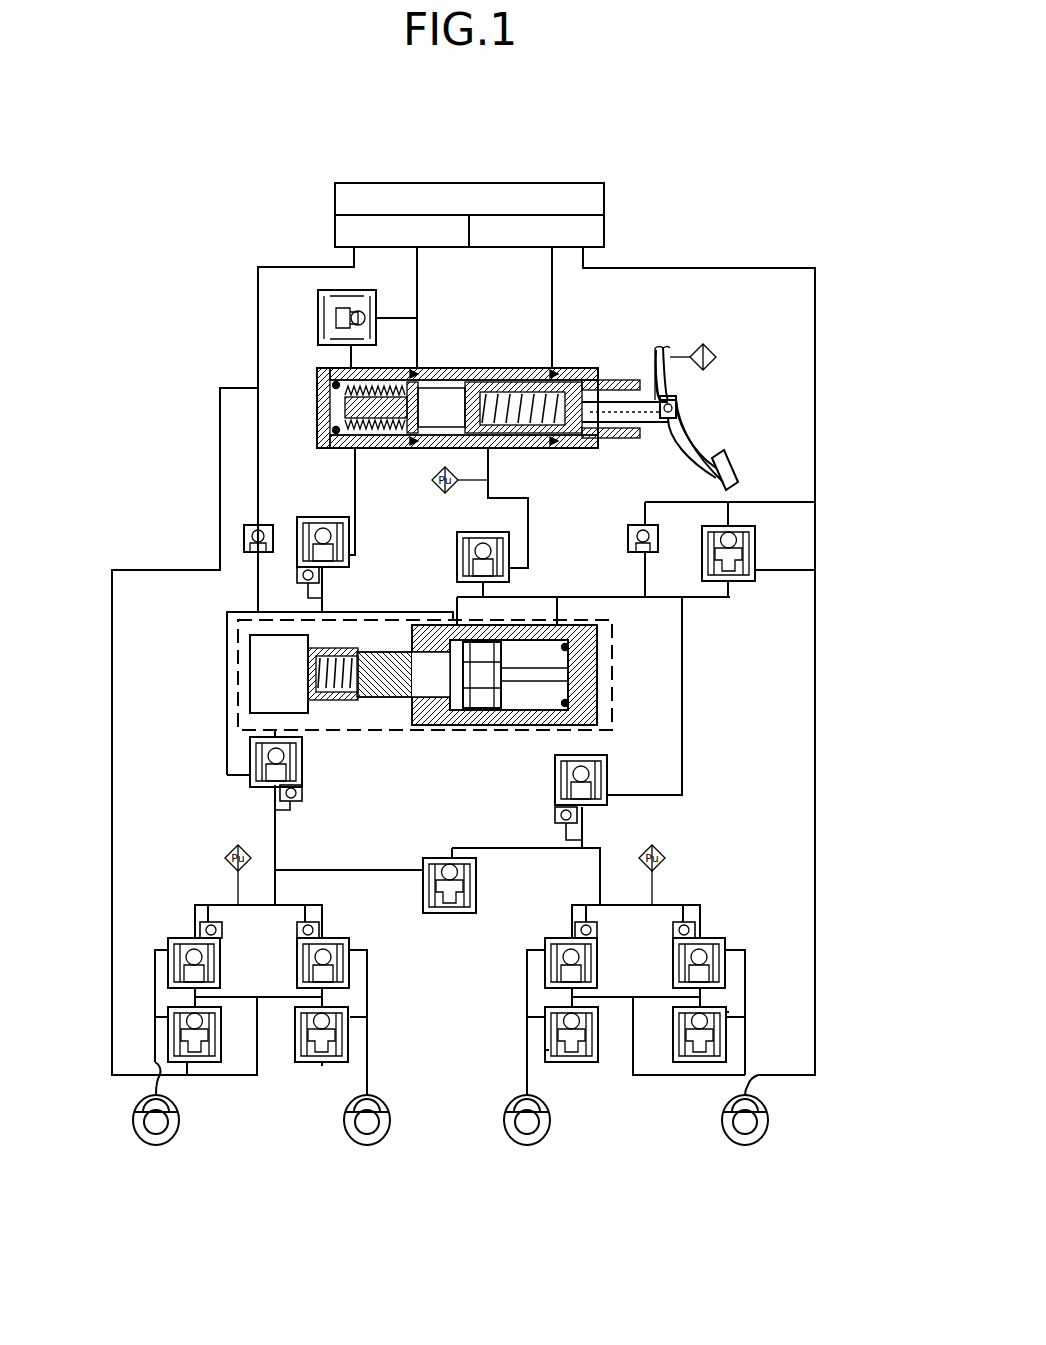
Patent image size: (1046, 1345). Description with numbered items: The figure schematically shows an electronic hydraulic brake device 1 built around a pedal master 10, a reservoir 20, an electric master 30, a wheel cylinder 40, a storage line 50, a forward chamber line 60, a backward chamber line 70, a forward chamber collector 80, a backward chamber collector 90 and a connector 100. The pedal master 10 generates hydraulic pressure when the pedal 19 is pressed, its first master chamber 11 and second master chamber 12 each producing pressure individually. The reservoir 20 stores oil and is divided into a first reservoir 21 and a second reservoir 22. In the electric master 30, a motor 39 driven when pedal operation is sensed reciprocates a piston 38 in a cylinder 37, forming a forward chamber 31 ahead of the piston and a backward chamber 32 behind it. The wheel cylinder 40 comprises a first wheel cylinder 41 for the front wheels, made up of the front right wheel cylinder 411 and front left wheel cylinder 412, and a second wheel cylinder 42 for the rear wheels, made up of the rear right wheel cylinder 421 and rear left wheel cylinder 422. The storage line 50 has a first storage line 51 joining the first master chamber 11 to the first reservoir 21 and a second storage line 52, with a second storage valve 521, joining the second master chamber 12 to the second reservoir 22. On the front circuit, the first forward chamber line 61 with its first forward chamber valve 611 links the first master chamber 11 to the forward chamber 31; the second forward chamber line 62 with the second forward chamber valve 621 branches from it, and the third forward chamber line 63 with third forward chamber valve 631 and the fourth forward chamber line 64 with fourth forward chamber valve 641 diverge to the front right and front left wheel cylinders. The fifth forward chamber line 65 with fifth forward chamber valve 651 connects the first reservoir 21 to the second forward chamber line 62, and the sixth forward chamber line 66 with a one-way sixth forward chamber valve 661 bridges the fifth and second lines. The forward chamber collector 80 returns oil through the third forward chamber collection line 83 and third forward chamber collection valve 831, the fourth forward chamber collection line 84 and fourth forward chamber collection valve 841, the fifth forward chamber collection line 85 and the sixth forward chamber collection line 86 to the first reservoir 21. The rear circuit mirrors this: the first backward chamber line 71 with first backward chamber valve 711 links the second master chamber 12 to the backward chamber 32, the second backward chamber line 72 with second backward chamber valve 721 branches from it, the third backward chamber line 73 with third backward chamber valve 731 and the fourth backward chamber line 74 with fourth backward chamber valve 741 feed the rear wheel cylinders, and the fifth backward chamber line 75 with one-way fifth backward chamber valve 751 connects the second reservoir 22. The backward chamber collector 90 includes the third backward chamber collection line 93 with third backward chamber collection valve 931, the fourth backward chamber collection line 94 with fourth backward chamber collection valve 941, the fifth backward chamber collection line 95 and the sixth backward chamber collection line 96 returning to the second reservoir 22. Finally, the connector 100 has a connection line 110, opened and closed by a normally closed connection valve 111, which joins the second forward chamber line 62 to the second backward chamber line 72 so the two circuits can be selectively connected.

The electronic hydraulic brake device 1 is at (690, 100).
The pedal master 10 is at (711, 417).
The first master chamber 11 is at (512, 386).
The second master chamber 12 is at (412, 376).
The pedal 19 is at (688, 448).
The reservoir 20 is at (469, 186).
The first reservoir 21 is at (536, 231).
The second reservoir 22 is at (402, 231).
The electric master 30 is at (450, 686).
The forward chamber 31 is at (540, 700).
The backward chamber 32 is at (472, 712).
The cylinder 37 is at (504, 712).
The piston 38 is at (378, 703).
The motor 39 is at (248, 660).
The wheel cylinder 40 is at (450, 1189).
The first wheel cylinder 41 is at (636, 1161).
The front right wheel cylinder 411 is at (709, 1138).
The front left wheel cylinder 412 is at (551, 1113).
The second wheel cylinder 42 is at (261, 1161).
The rear right wheel cylinder 421 is at (332, 1138).
The rear left wheel cylinder 422 is at (180, 1113).
The storage line 50 is at (352, 265).
The first storage line 51 is at (551, 272).
The second storage line 52 is at (418, 265).
The second storage valve 521 is at (374, 305).
The forward chamber line 60 is at (690, 716).
The first forward chamber line 61 is at (530, 510).
The first forward chamber valve 611 is at (482, 532).
The second forward chamber line 62 is at (684, 775).
The second forward chamber valve 621 is at (608, 790).
The third forward chamber line 63 is at (746, 962).
The third forward chamber valve 631 is at (698, 933).
The fourth forward chamber line 64 is at (527, 962).
The fourth forward chamber valve 641 is at (575, 930).
The fifth forward chamber line 65 is at (790, 570).
The fifth forward chamber valve 651 is at (760, 530).
The sixth forward chamber line 66 is at (800, 500).
The sixth forward chamber valve 661 is at (640, 524).
The backward chamber line 70 is at (216, 810).
The first backward chamber line 71 is at (350, 522).
The first backward chamber valve 711 is at (320, 575).
The second backward chamber line 72 is at (227, 738).
The second backward chamber valve 721 is at (282, 797).
The third backward chamber line 73 is at (350, 965).
The third backward chamber valve 731 is at (318, 934).
The fourth backward chamber line 74 is at (165, 960).
The fourth backward chamber valve 741 is at (200, 926).
The fifth backward chamber line 75 is at (260, 478).
The fifth backward chamber valve 751 is at (244, 530).
The forward chamber collector 80 is at (822, 698).
The third forward chamber collection line 83 is at (735, 1030).
The third forward chamber collection valve 831 is at (728, 1012).
The fourth forward chamber collection line 84 is at (527, 1020).
The fourth forward chamber collection valve 841 is at (542, 1050).
The fifth forward chamber collection line 85 is at (630, 997).
The sixth forward chamber collection line 86 is at (816, 865).
The backward chamber collector 90 is at (108, 830).
The third backward chamber collection line 93 is at (352, 1020).
The third backward chamber collection valve 931 is at (302, 1064).
The fourth backward chamber collection line 94 is at (166, 1020).
The fourth backward chamber collection valve 941 is at (185, 1078).
The fifth backward chamber collection line 95 is at (255, 997).
The sixth backward chamber collection line 96 is at (112, 890).
The connector 100 is at (437, 850).
The connection line 110 is at (504, 846).
The connection valve 111 is at (440, 857).